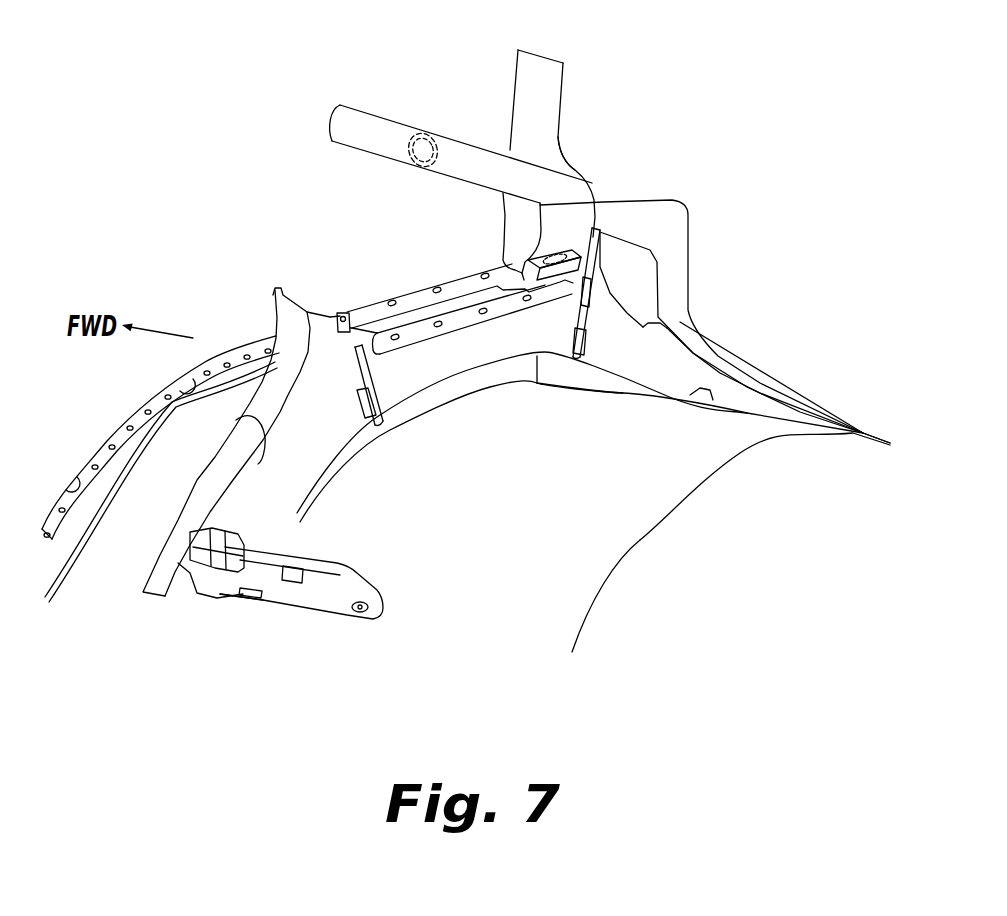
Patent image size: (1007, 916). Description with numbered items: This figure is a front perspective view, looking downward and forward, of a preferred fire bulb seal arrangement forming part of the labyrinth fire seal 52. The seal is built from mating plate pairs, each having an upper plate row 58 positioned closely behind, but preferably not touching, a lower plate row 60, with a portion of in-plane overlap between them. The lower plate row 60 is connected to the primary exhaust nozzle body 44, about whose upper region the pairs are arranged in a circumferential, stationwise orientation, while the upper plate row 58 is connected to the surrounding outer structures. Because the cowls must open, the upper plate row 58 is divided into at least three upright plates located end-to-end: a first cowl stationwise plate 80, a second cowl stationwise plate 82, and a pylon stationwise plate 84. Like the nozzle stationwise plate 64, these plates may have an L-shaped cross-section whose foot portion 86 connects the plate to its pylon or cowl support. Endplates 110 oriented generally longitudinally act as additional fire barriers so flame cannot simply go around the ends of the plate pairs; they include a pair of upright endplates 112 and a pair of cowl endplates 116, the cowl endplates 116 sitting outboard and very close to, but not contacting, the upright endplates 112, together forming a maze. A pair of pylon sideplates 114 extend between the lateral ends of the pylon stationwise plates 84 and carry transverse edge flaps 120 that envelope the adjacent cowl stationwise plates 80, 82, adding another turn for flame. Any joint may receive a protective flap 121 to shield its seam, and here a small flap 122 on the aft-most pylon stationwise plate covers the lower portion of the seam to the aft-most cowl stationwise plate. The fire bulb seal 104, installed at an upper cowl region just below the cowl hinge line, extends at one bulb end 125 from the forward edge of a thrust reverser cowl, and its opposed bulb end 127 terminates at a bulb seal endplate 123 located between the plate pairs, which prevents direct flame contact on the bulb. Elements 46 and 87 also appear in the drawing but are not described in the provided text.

The primary exhaust nozzle body 44 is at (515, 612).
The fender panel 46 is at (692, 588).
The labyrinth fire seal 52 is at (227, 300).
The upper plate row 58 is at (145, 607).
The lower plate row 60 is at (345, 488).
The nozzle stationwise plate 64 is at (560, 387).
The first cowl stationwise plate 80 is at (682, 382).
The second cowl stationwise plate 82 is at (180, 523).
The pylon stationwise plate 84 is at (387, 308).
The foot portion 86 is at (422, 290).
The hem flange 87 is at (236, 420).
The fire bulb seal 104 is at (458, 153).
The endplates 110 is at (275, 637).
The upright endplates 112 is at (347, 582).
The pylon sideplates 114 is at (512, 272).
The cowl endplates 116 is at (223, 573).
The edge flaps 120 is at (587, 307).
The protective flap 121 is at (552, 318).
The small flap 122 is at (583, 343).
The bulb seal endplate 123 is at (582, 253).
The bulb end 125 is at (347, 113).
The opposed bulb end 127 is at (583, 197).